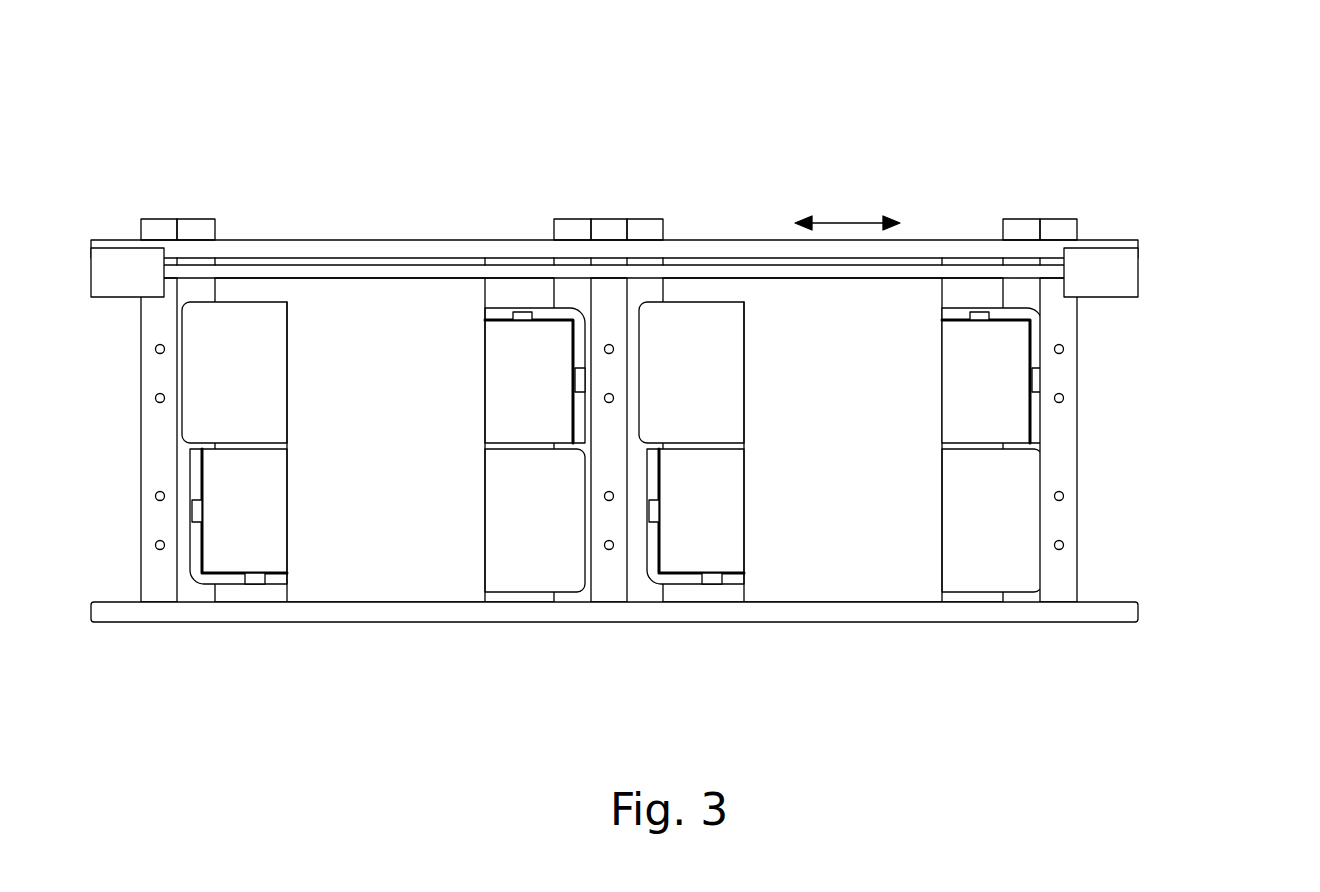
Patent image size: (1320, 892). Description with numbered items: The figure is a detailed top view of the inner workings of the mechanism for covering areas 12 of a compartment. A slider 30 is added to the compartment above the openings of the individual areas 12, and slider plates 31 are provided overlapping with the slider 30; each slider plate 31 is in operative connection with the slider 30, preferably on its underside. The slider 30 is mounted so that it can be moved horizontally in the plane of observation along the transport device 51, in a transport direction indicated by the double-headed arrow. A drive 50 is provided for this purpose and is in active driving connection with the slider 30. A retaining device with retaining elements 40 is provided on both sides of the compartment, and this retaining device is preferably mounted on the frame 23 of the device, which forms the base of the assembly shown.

The area 12 is at (1003, 353).
The frame 23 is at (1065, 612).
The slider 30 is at (883, 297).
The slider plate 31 is at (702, 328).
The retaining element 40 is at (1065, 345).
The drive 50 is at (1120, 272).
The transport device 51 is at (403, 258).